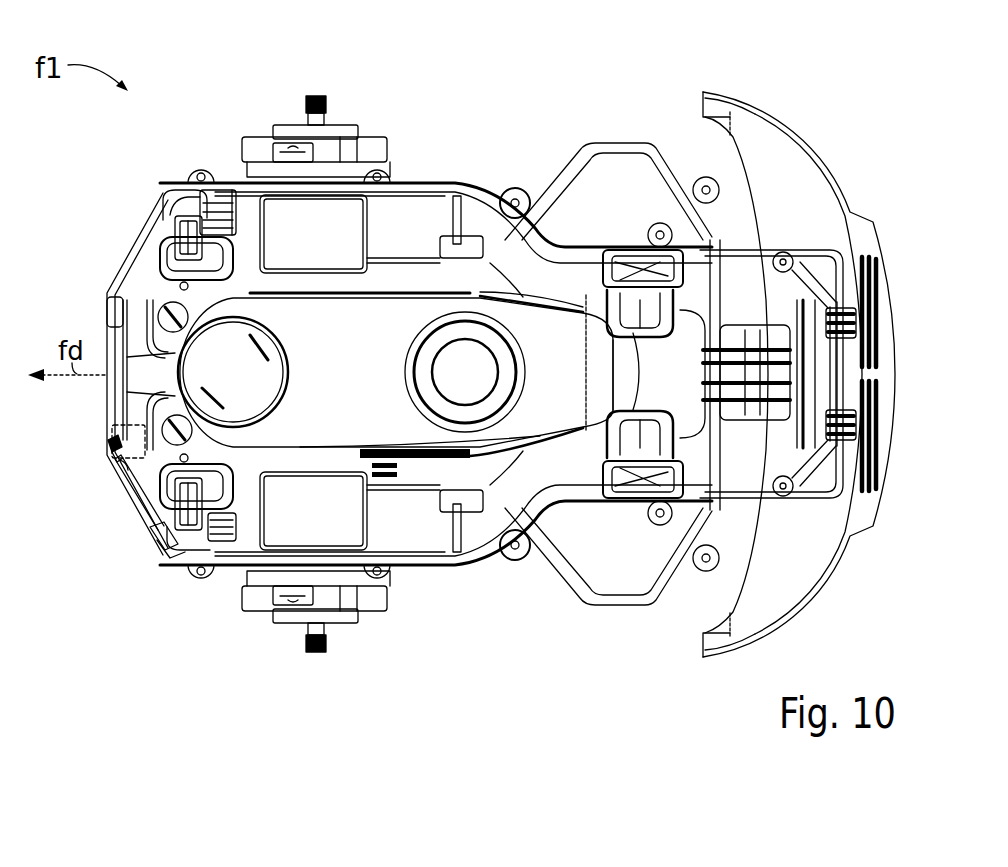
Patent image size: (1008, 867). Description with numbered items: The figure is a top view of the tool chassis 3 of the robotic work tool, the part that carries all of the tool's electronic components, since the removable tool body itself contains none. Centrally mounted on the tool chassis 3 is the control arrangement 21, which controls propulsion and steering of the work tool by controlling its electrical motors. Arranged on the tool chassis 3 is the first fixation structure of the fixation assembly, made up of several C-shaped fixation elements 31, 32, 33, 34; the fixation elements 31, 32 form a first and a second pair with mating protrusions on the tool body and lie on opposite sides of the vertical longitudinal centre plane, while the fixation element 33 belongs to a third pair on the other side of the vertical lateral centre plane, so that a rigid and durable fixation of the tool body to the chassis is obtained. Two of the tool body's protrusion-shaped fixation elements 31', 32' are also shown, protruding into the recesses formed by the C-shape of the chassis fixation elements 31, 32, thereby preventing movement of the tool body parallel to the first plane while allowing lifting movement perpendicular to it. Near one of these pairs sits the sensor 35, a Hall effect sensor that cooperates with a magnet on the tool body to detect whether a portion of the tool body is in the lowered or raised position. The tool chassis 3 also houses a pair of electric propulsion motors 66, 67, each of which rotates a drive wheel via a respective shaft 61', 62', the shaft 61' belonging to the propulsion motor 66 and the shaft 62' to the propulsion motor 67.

The tool chassis 3 is at (785, 60).
The control arrangement 21 is at (334, 393).
The fixation element 31 is at (153, 506).
The fixation element 31' is at (171, 549).
The fixation element 32 is at (155, 235).
The fixation element 32' is at (174, 193).
The fixation element 33 is at (590, 447).
The fixation element 34 is at (597, 300).
The sensor 35 is at (133, 433).
The shaft 61' is at (283, 645).
The shaft 62' is at (356, 103).
The propulsion motor 66 is at (387, 605).
The propulsion motor 67 is at (380, 142).